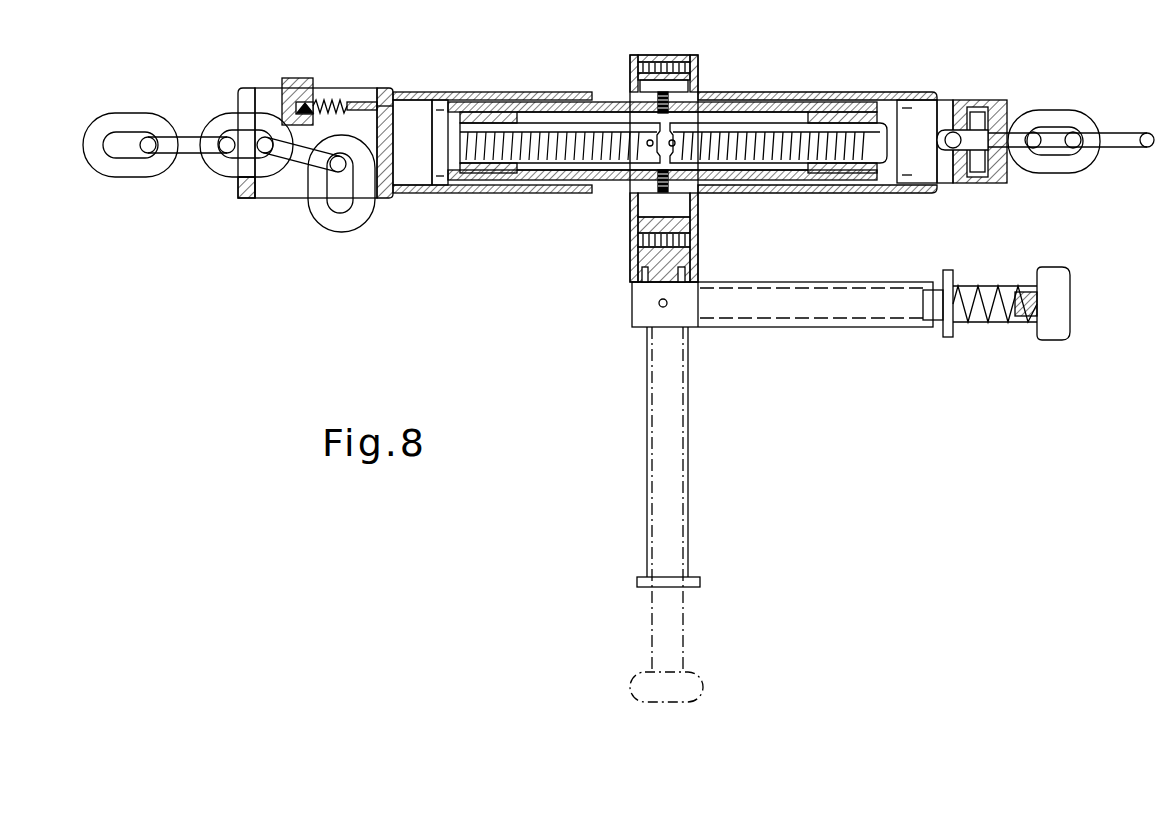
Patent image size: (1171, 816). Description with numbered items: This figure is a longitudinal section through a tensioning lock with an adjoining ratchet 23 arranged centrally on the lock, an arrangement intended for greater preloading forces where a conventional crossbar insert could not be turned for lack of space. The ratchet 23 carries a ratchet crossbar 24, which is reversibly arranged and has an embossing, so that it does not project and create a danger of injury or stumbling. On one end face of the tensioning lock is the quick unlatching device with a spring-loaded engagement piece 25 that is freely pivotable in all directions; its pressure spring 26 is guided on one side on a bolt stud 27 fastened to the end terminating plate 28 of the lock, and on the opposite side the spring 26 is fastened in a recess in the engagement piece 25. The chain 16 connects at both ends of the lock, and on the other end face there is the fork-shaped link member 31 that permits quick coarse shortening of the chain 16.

The chain 16 is at (187, 150).
The ratchet 23 is at (633, 222).
The ratchet crossbar 24 is at (818, 307).
The engagement piece 25 is at (311, 78).
The pressure spring 26 is at (348, 100).
The bolt stud 27 is at (396, 92).
The end terminating plate 28 is at (388, 130).
The eye bolt head 31 is at (998, 173).